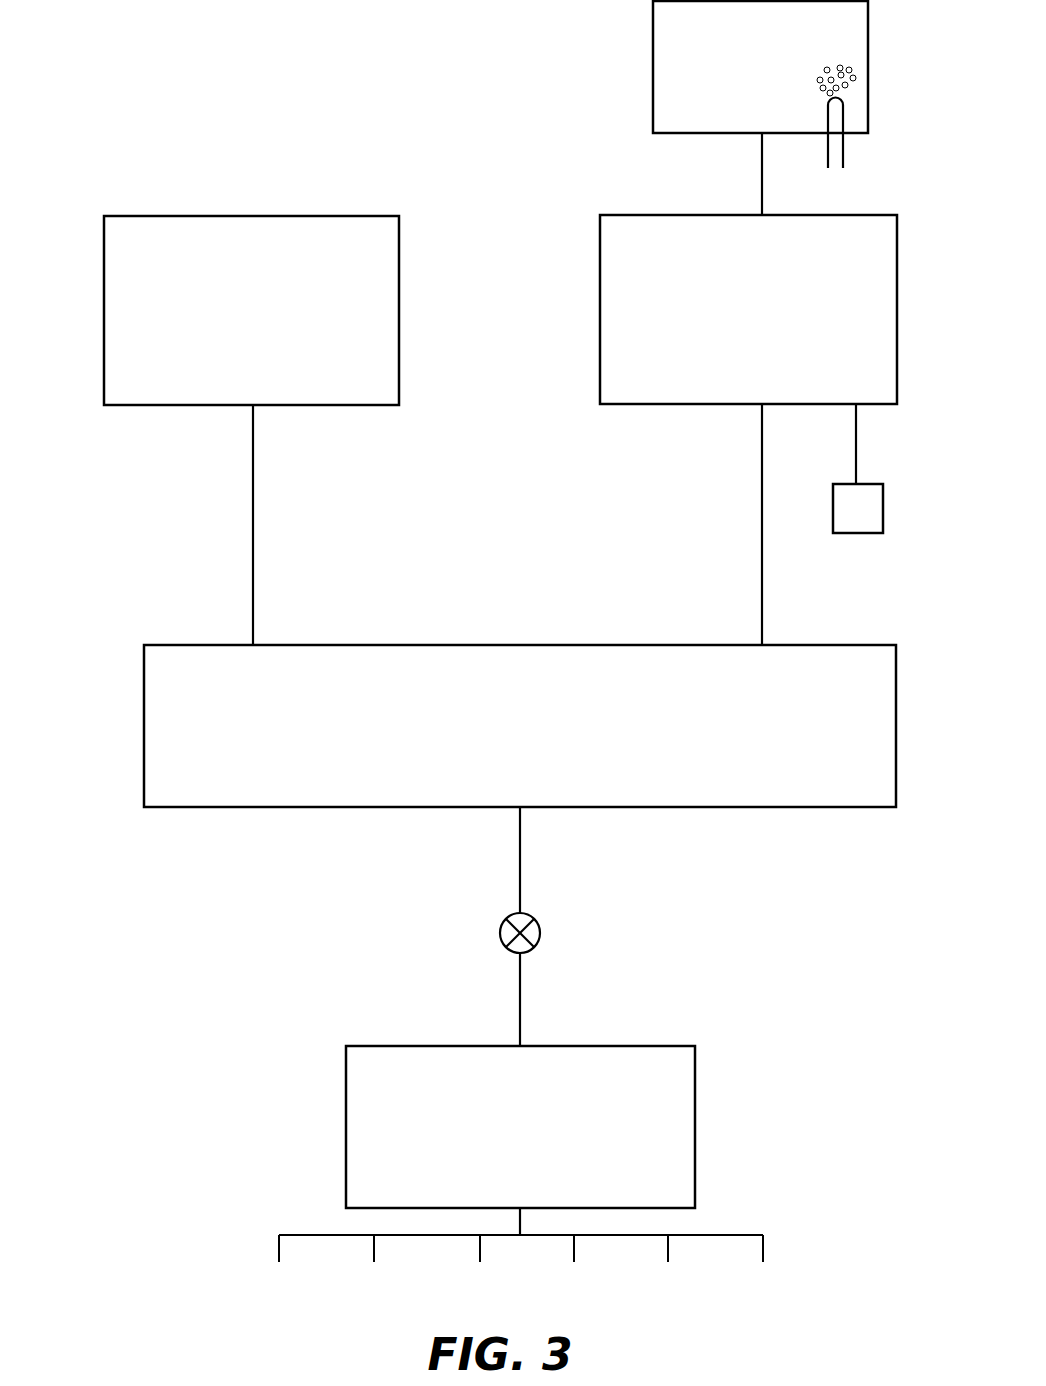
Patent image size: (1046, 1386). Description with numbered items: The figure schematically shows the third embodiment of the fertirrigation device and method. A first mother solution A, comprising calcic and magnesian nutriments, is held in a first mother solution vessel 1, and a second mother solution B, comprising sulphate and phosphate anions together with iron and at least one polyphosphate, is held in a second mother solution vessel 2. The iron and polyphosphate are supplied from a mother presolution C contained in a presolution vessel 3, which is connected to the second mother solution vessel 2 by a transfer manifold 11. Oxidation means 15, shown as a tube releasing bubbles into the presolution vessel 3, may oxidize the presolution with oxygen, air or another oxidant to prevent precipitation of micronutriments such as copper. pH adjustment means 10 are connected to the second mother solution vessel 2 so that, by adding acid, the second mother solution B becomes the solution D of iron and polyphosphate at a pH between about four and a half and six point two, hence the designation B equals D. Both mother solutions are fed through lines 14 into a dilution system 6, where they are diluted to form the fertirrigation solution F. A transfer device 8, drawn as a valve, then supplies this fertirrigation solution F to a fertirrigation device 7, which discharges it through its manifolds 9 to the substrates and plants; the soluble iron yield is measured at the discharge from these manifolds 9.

The first mother solution vessel 1 is at (103, 267).
The second mother solution vessel 2 is at (598, 240).
The presolution vessel 3 is at (652, 82).
The dilution system 6 is at (897, 727).
The fertirrigation device 7 is at (697, 1146).
The transfer device 8 is at (542, 933).
The manifolds 9 is at (765, 1248).
The pH adjustment means 10 is at (883, 505).
The transfer manifold 11 is at (760, 186).
The connecting line 14 is at (255, 530).
The oxidation means 15 is at (835, 180).